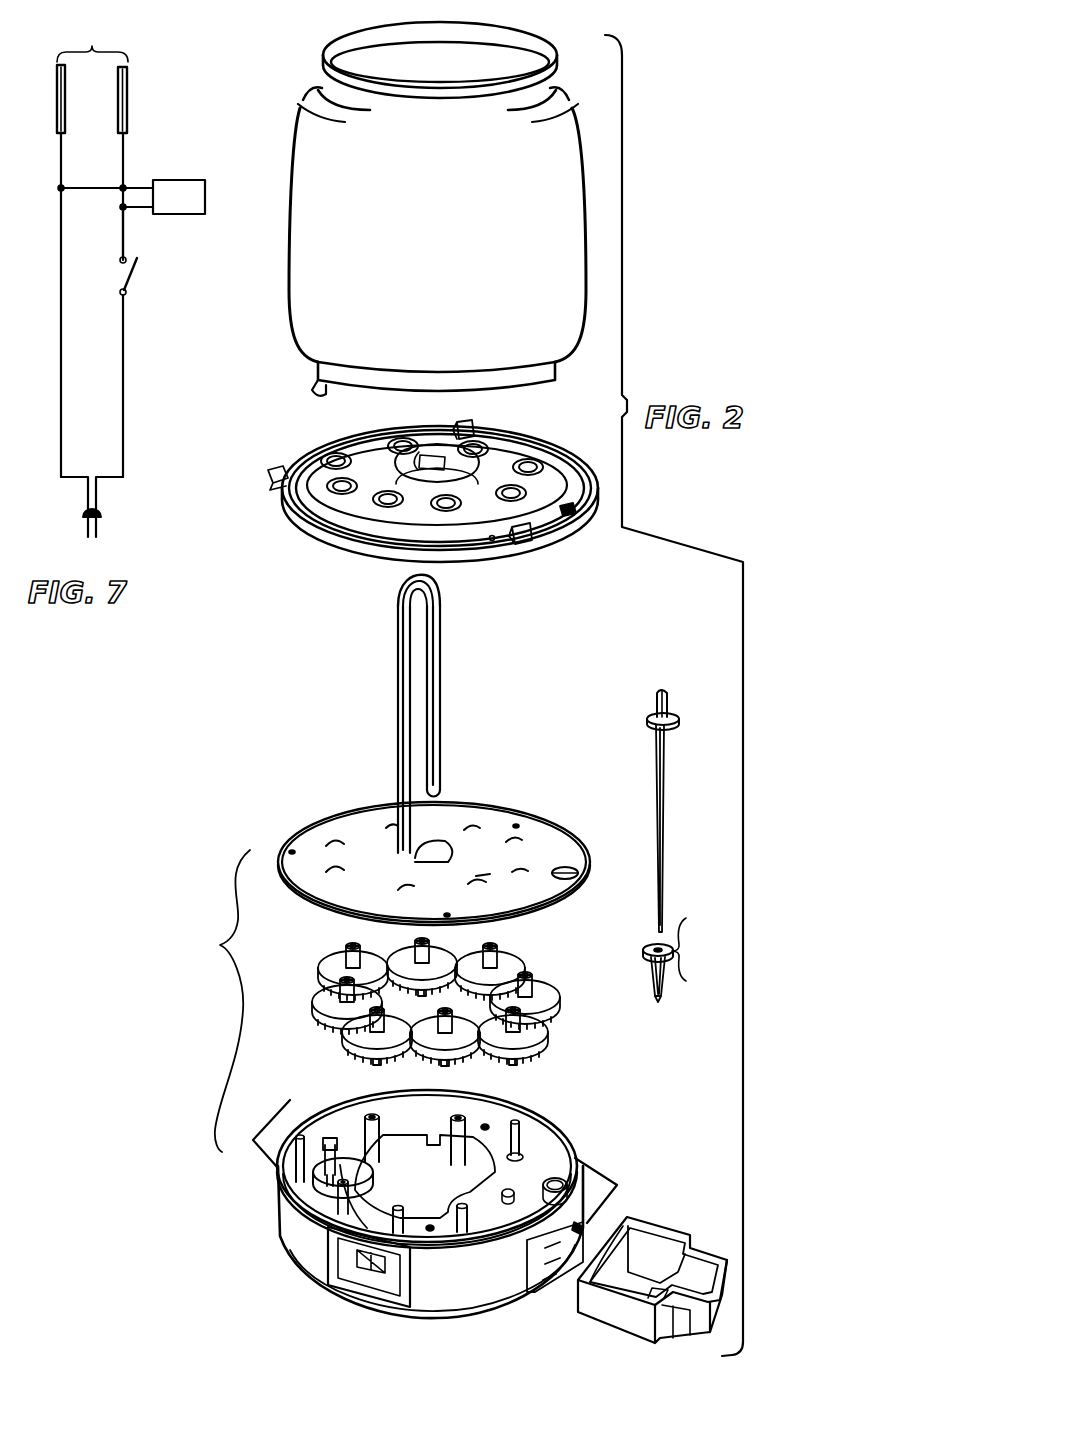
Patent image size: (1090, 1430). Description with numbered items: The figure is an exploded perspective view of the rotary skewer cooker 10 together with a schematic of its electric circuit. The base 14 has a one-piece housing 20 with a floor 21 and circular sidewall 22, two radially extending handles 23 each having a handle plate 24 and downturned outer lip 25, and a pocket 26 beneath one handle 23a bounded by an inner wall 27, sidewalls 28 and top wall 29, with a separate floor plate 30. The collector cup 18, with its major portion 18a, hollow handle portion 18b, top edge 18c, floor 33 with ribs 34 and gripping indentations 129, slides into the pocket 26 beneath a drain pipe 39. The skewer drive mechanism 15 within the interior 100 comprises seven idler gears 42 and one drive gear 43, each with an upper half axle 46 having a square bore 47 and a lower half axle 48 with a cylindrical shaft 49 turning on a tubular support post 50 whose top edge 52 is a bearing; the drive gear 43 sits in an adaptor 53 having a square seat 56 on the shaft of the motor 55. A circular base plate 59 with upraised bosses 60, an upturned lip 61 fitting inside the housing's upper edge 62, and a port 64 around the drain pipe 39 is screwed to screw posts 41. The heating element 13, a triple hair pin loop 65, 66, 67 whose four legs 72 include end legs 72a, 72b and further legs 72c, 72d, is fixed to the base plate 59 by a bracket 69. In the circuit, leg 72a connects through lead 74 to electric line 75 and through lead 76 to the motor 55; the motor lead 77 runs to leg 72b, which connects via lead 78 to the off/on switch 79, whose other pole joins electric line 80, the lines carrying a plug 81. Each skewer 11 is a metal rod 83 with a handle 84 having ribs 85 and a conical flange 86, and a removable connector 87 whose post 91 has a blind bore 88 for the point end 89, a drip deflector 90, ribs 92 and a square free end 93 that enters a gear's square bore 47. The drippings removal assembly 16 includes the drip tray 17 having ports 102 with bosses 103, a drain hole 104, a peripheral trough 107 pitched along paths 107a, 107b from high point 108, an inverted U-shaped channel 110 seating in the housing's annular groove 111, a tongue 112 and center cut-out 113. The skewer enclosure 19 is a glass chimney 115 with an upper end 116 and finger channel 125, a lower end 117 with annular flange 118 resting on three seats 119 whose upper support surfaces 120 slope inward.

In FIG. 2, the rotary skewer cooker 10 is at (640, 398).
In FIG. 2, the skewers 11 is at (712, 937).
In FIG. 7, the electric heating element 13 is at (95, 44).
In FIG. 2, the electric heating element 13 is at (442, 692).
In FIG. 2, the base 14 is at (214, 946).
In FIG. 7, the skewer drive mechanism 15 is at (212, 156).
In FIG. 2, the skewer drive mechanism 15 is at (330, 1105).
In FIG. 2, the food drippings removal assembly 16 is at (458, 758).
In FIG. 2, the drip tray 17 is at (540, 550).
In FIG. 2, the collector cup 18 is at (683, 1279).
In FIG. 2, the major portion 18a is at (640, 1287).
In FIG. 2, the hollow handle portion 18b is at (718, 1268).
In FIG. 2, the top edge 18c is at (690, 1234).
In FIG. 2, the skewer enclosure 19 is at (460, 200).
In FIG. 2, the housing 20 is at (421, 1199).
In FIG. 2, the floor 21 is at (430, 1180).
In FIG. 2, the circular sidewall 22 is at (340, 1260).
In FIG. 2, the handles 23 is at (268, 1128).
In FIG. 2, the handle 23a is at (612, 1172).
In FIG. 2, the handle plate 24 is at (315, 1115).
In FIG. 2, the outer lip 25 is at (588, 1222).
In FIG. 2, the pocket 26 is at (538, 1296).
In FIG. 2, the inner wall 27 is at (468, 1194).
In FIG. 2, the sidewalls 28 is at (540, 1145).
In FIG. 2, the top wall 29 is at (560, 1178).
In FIG. 2, the floor plate 30 is at (550, 1296).
In FIG. 2, the cup floor 33 is at (652, 1318).
In FIG. 2, the ribs 34 is at (540, 1252).
In FIG. 2, the drain pipe 39 is at (584, 1228).
In FIG. 2, the screw posts 41 is at (531, 1122).
In FIG. 2, the idler gears 42 is at (440, 994).
In FIG. 2, the drive gear 43 is at (312, 1002).
In FIG. 2, the half axle 46 is at (520, 1020).
In FIG. 2, the square bore 47 is at (342, 948).
In FIG. 2, the half axle 48 is at (540, 1062).
In FIG. 2, the cylindrical shaft 49 is at (629, 1064).
In FIG. 2, the tubular support post 50 is at (374, 1112).
In FIG. 2, the top edge 52 is at (460, 1116).
In FIG. 2, the adaptor 53 is at (322, 1186).
In FIG. 7, the motor 55 is at (205, 207).
In FIG. 2, the motor 55 is at (343, 1216).
In FIG. 2, the square seat 56 is at (333, 1136).
In FIG. 2, the base plate 59 is at (452, 838).
In FIG. 2, the upraised bosses 60 is at (490, 874).
In FIG. 2, the upturned lip 61 is at (566, 838).
In FIG. 2, the upper edge 62 is at (300, 1140).
In FIG. 2, the port 64 is at (578, 875).
In FIG. 2, the hair pin loop 65 is at (435, 714).
In FIG. 2, the hair pin loop 66 is at (442, 792).
In FIG. 2, the hair pin loop 67 is at (440, 590).
In FIG. 2, the bracket 69 is at (392, 863).
In FIG. 2, the legs 72 is at (435, 729).
In FIG. 7, the end leg 72a is at (66, 113).
In FIG. 2, the end leg 72a is at (396, 785).
In FIG. 7, the end leg 72b is at (128, 100).
In FIG. 2, the end leg 72b is at (408, 770).
In FIG. 2, the electrode outer sheath 72c is at (440, 718).
In FIG. 2, the electrode inner conductor 72d is at (445, 748).
In FIG. 7, the lead 74 is at (63, 162).
In FIG. 7, the electric line 75 is at (87, 500).
In FIG. 7, the lead 76 is at (92, 194).
In FIG. 7, the motor lead 77 is at (140, 205).
In FIG. 7, the lead 78 is at (128, 240).
In FIG. 7, the off/on switch 79 is at (140, 278).
In FIG. 2, the off/on switch 79 is at (368, 1280).
In FIG. 7, the electric line 80 is at (128, 470).
In FIG. 7, the plug 81 is at (101, 515).
In FIG. 2, the metal rod 83 is at (690, 775).
In FIG. 2, the handle 84 is at (676, 708).
In FIG. 2, the ribs 85 is at (676, 690).
In FIG. 2, the conical flange 86 is at (680, 724).
In FIG. 2, the removable connector 87 is at (663, 969).
In FIG. 2, the blind bore 88 is at (652, 948).
In FIG. 2, the point end 89 is at (650, 930).
In FIG. 2, the drip deflector 90 is at (674, 949).
In FIG. 2, the post 91 is at (668, 985).
In FIG. 2, the ribs 92 is at (648, 972).
In FIG. 2, the free end 93 is at (662, 1000).
In FIG. 2, the interior 100 is at (418, 1240).
In FIG. 2, the ports 102 is at (490, 440).
In FIG. 2, the boss 103 is at (450, 505).
In FIG. 2, the drain hole 104 is at (598, 486).
In FIG. 2, the circular trough 107 is at (565, 476).
In FIG. 2, the semi-circular path 107a is at (438, 432).
In FIG. 2, the semi-circular path 107b is at (492, 538).
In FIG. 2, the high point 108 is at (318, 460).
In FIG. 2, the inverted U-shaped channel 110 is at (592, 524).
In FIG. 2, the annular groove 111 is at (295, 1222).
In FIG. 2, the tongue 112 is at (388, 495).
In FIG. 2, the center cut-out 113 is at (448, 428).
In FIG. 2, the glass chimney 115 is at (447, 243).
In FIG. 2, the upper end 116 is at (356, 40).
In FIG. 2, the lower end 117 is at (312, 386).
In FIG. 2, the annular flange 118 is at (300, 362).
In FIG. 2, the seats 119 is at (456, 424).
In FIG. 2, the upper support surface 120 is at (280, 464).
In FIG. 2, the finger channel 125 is at (564, 72).
In FIG. 2, the indentations 129 is at (680, 1320).